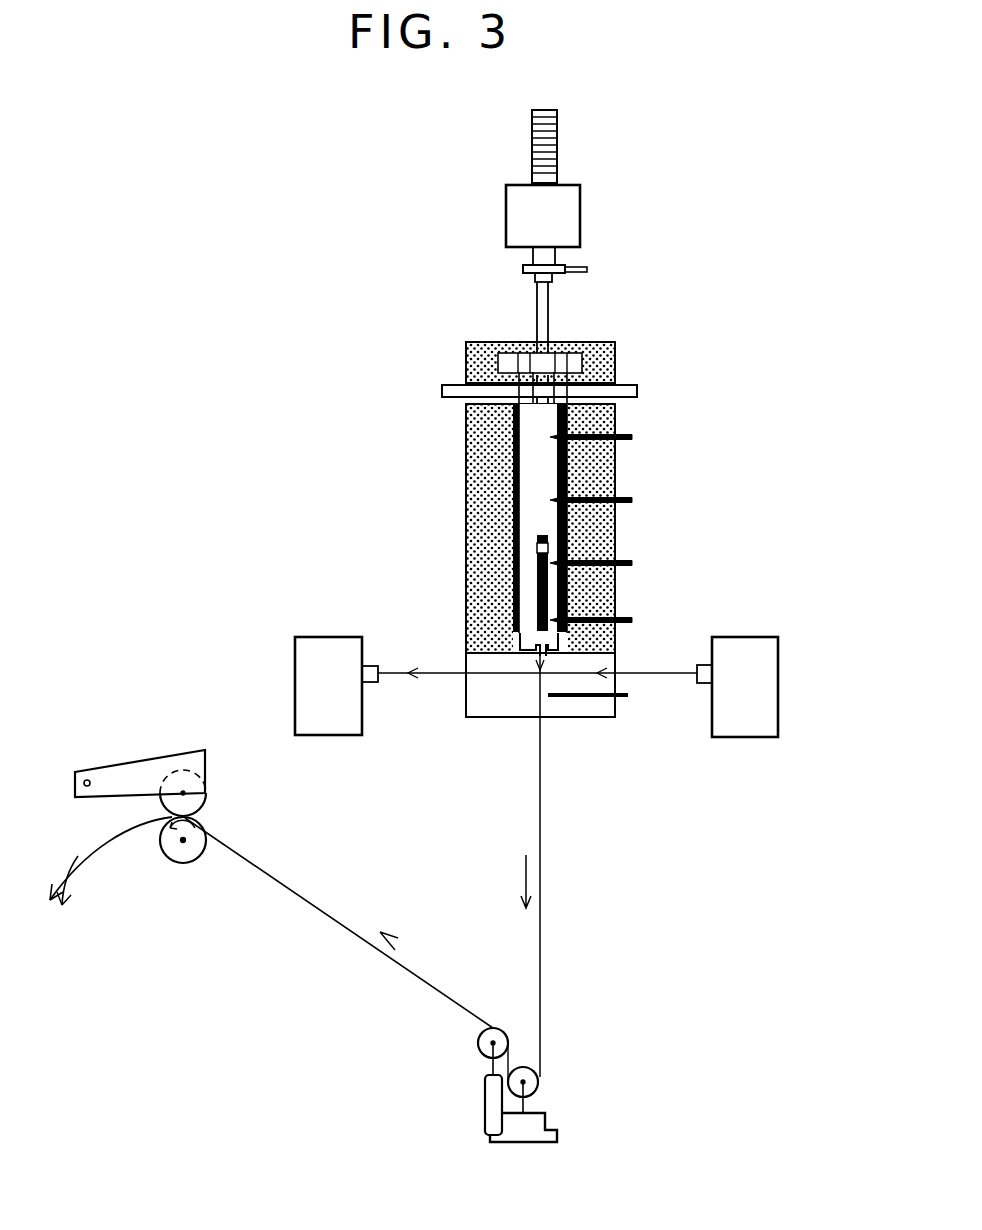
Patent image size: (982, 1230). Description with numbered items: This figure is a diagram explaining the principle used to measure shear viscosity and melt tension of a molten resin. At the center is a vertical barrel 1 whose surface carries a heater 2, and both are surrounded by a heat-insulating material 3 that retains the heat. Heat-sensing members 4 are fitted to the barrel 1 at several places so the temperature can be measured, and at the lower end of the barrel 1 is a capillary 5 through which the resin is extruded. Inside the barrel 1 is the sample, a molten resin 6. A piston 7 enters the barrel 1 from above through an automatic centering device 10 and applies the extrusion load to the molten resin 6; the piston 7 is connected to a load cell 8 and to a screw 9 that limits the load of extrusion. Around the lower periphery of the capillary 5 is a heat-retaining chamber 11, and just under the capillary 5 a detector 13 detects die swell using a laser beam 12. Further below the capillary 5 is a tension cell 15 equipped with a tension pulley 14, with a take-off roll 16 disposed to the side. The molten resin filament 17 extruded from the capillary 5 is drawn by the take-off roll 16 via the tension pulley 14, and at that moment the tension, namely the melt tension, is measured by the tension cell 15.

The barrel 1 is at (555, 487).
The heater 2 is at (513, 450).
The heat-insulating material 3 is at (615, 540).
The heat-sensing members 4 is at (615, 563).
The capillary 5 is at (550, 657).
The molten resin 6 is at (535, 573).
The piston 7 is at (548, 305).
The load cell 8 is at (580, 225).
The screw 9 is at (557, 160).
The automatic centering device 10 is at (583, 363).
The heat-retaining chamber 11 is at (488, 718).
The laser beam 12 is at (665, 672).
The detector 13 is at (330, 637).
The tension pulley 14 is at (527, 1067).
The tension cell 15 is at (553, 1113).
The take-off roll 16 is at (175, 863).
The molten resin filament 17 is at (541, 898).